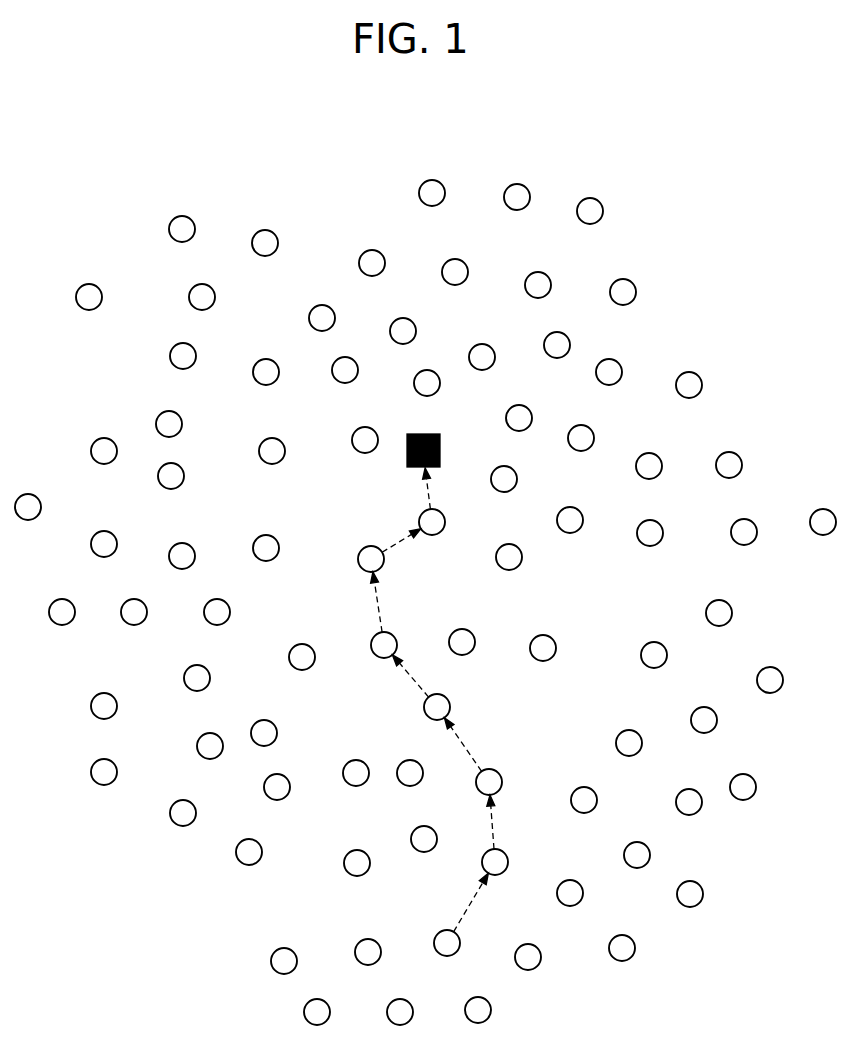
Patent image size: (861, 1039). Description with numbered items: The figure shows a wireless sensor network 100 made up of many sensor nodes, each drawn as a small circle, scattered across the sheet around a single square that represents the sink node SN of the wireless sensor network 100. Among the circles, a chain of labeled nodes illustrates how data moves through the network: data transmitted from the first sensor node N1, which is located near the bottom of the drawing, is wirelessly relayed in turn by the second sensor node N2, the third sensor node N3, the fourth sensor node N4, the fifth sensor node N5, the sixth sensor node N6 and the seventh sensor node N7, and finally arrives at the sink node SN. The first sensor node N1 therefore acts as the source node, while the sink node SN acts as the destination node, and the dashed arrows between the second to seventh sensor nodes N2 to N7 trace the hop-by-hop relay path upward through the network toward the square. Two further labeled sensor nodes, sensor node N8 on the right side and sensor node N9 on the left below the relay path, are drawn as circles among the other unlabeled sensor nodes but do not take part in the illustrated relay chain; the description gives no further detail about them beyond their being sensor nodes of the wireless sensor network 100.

The wireless sensor network 100 is at (139, 167).
The first sensor node N1 is at (460, 940).
The second sensor node N2 is at (508, 860).
The third sensor node N3 is at (501, 777).
The fourth sensor node N4 is at (450, 704).
The fifth sensor node N5 is at (395, 635).
The sixth sensor node N6 is at (361, 549).
The seventh sensor node N7 is at (445, 519).
The sensor node N8 is at (732, 613).
The sensor node N9 is at (356, 760).
The sink node SN is at (440, 450).